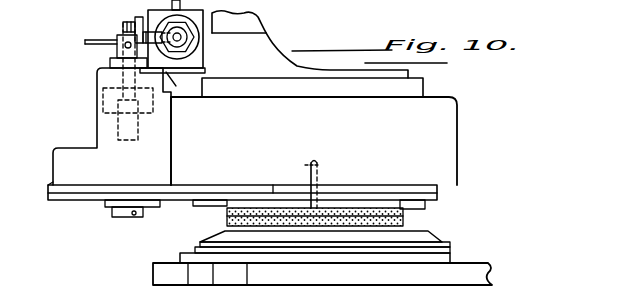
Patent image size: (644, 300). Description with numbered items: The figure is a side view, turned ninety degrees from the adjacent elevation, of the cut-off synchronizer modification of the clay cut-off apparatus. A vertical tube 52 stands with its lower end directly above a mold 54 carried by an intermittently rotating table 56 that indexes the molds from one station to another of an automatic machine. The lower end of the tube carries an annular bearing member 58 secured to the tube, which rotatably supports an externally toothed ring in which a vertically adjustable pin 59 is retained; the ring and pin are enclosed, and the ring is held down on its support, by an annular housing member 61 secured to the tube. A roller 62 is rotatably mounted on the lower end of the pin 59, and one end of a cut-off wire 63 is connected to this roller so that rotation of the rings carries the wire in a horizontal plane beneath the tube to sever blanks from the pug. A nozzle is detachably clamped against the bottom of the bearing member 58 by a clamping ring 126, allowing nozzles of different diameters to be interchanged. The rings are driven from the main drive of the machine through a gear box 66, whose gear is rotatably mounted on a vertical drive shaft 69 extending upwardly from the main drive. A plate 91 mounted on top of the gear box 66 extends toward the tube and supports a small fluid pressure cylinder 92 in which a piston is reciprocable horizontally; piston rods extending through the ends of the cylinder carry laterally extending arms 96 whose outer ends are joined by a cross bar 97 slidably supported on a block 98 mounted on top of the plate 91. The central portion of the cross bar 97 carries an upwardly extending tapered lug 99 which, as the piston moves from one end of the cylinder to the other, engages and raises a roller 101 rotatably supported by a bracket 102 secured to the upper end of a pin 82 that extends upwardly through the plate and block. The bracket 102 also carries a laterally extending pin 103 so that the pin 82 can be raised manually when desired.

The vertical tube 52 is at (258, 24).
The mold 54 is at (224, 234).
The rotating table 56 is at (153, 273).
The annular bearing member 58 is at (437, 186).
The vertically adjustable pin 59 is at (308, 165).
The annular housing member 61 is at (452, 118).
The roller 62 is at (304, 208).
The cut-off wire 63 is at (323, 206).
The gear box 66 is at (82, 147).
The vertical drive shaft 69 is at (120, 211).
The pin 82 is at (100, 75).
The plate 91 is at (179, 85).
The fluid pressure cylinder 92 is at (198, 58).
The laterally extending arm 96 is at (183, 9).
The cross bar 97 is at (192, 47).
The block 98 is at (110, 62).
The tapered lug 99 is at (133, 19).
The roller 101 is at (143, 17).
The bracket 102 is at (117, 35).
The laterally extending pin 103 is at (85, 42).
The clamping ring 126 is at (437, 195).